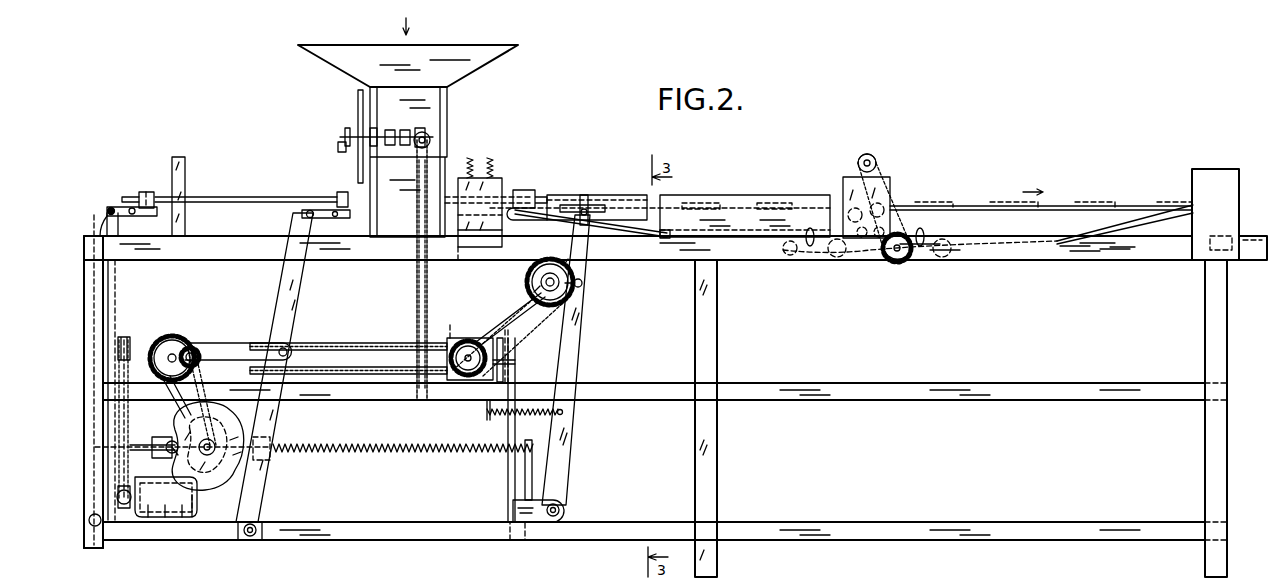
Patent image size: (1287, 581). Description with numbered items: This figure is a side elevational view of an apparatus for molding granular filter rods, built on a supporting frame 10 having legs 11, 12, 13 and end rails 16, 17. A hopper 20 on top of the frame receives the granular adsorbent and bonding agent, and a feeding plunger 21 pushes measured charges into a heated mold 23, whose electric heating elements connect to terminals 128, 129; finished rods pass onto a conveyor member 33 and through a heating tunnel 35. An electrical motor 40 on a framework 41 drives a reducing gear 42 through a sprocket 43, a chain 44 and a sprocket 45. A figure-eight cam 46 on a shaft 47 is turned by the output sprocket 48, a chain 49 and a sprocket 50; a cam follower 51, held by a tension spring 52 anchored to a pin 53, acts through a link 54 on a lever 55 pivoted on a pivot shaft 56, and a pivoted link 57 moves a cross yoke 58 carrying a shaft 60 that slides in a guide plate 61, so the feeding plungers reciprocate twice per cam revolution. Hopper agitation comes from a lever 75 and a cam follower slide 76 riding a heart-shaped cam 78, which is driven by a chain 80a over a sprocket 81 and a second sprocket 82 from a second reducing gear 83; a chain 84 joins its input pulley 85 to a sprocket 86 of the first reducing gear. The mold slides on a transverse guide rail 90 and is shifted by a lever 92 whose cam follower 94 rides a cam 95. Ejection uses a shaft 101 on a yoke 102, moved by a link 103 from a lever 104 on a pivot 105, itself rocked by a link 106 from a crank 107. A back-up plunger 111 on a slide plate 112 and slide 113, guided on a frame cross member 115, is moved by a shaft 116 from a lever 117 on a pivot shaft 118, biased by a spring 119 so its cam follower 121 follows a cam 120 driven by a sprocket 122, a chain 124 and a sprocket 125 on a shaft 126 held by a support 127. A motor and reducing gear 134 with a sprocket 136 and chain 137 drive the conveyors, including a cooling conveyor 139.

The supporting frame 10 is at (1233, 325).
The leg 11 is at (106, 288).
The leg 12 is at (1207, 443).
The leg 13 is at (719, 341).
The end rail 16 is at (101, 541).
The end rail 17 is at (1207, 510).
The hopper 20 is at (441, 104).
The feeding plunger 21 is at (460, 255).
The heated mold 23 is at (503, 184).
The conveyor member 33 is at (718, 196).
The heating tunnel 35 is at (754, 196).
The electrical motor 40 is at (192, 518).
The framework 41 is at (385, 522).
The reducing gear 42 is at (171, 334).
The sprocket 43 is at (157, 497).
The chain 44 is at (125, 430).
The sprocket 45 is at (128, 340).
The cam 46 is at (235, 423).
The shaft 47 is at (214, 449).
The output sprocket 48 is at (170, 385).
The chain 49 is at (177, 410).
The sprocket 50 is at (206, 440).
The cam follower 51 is at (209, 456).
The tension spring 52 is at (400, 447).
The pin 53 is at (525, 476).
The link 54 is at (141, 451).
The lever 55 is at (105, 220).
The pivot shaft 56 is at (100, 525).
The pivoted link 57 is at (129, 216).
The cross yoke 58 is at (147, 192).
The shaft 60 is at (127, 197).
The guide plate 61 is at (178, 157).
The lever 75 is at (358, 104).
The cam follower slide 76 is at (339, 148).
The cam 78 is at (346, 131).
The chain 80a is at (416, 288).
The sprocket 81 is at (431, 140).
The second sprocket 82 is at (416, 342).
The reducing gear 83 is at (468, 340).
The chain 84 is at (347, 343).
The input pulley 85 is at (452, 325).
The sprocket 86 is at (193, 345).
The transverse guide rail 90 is at (478, 254).
The lever 92 is at (507, 433).
The cam follower 94 is at (504, 346).
The cam 95 is at (509, 373).
The shaft 101 is at (241, 197).
The cross head or yoke 102 is at (338, 192).
The link 103 is at (318, 209).
The lever 104 is at (282, 301).
The pivot 105 is at (250, 541).
The link 106 is at (238, 343).
The crank 107 is at (176, 354).
The back-up plunger 111 is at (522, 196).
The slide plate 112 is at (552, 210).
The slide 113 is at (612, 210).
The frame cross member 115 is at (668, 233).
The shaft 116 is at (584, 200).
The lever 117 is at (578, 345).
The pivot shaft 118 is at (560, 508).
The spring 119 is at (525, 417).
The cam 120 is at (566, 300).
The cam follower 121 is at (582, 284).
The sprocket 122 is at (516, 362).
The chain 124 is at (497, 313).
The sprocket 125 is at (540, 310).
The shaft 126 is at (545, 283).
The support 127 is at (550, 270).
The terminal 128 is at (468, 159).
The terminal 129 is at (492, 160).
The electric motor and reducing gear 134 is at (866, 153).
The sprocket 136 is at (862, 172).
The chain 137 is at (886, 186).
The conveyor 139 is at (1132, 206).